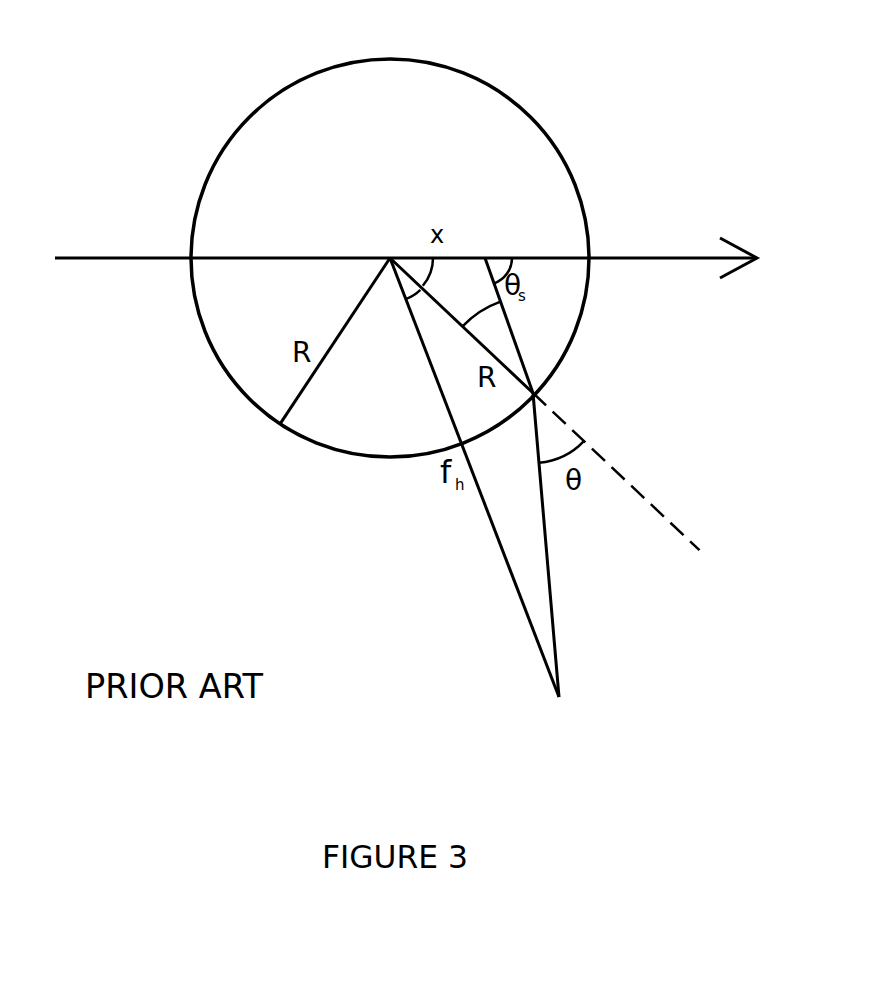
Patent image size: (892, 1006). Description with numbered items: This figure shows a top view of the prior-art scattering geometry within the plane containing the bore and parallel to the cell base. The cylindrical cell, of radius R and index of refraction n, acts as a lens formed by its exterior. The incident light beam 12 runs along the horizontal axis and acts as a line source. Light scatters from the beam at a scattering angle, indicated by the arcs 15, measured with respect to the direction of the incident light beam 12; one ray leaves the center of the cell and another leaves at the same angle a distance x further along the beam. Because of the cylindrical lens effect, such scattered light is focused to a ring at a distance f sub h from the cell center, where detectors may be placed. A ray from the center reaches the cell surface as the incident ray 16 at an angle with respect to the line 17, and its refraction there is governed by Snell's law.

The incident light beam 12 is at (425, 258).
The arcs 15 is at (507, 201).
The incident ray 16 is at (468, 302).
The line 17 is at (474, 477).